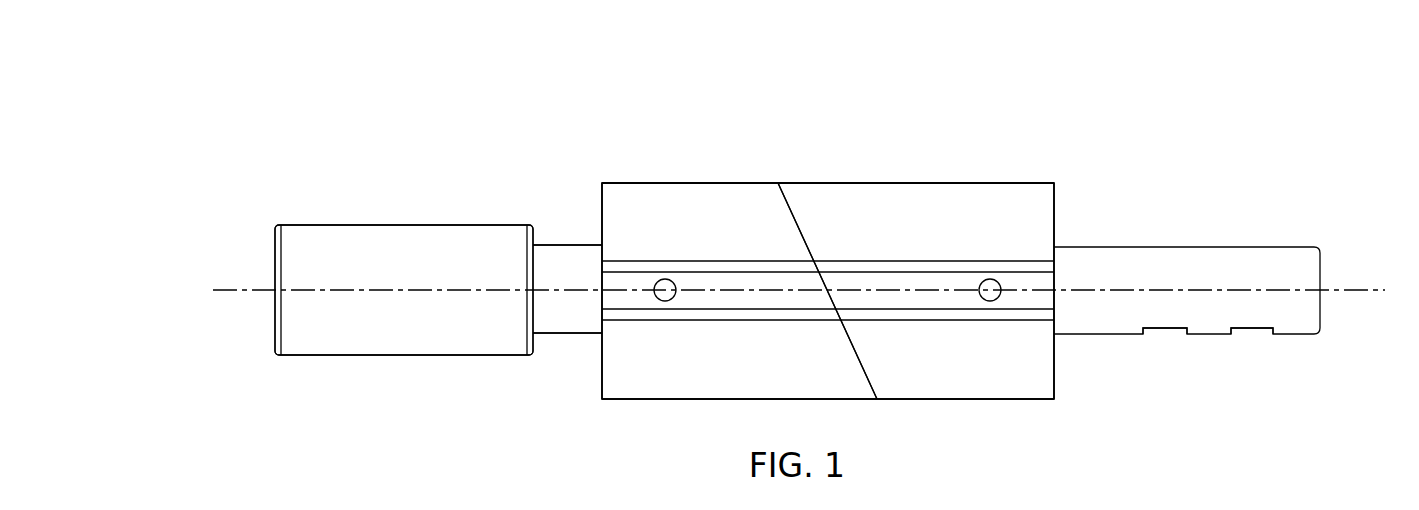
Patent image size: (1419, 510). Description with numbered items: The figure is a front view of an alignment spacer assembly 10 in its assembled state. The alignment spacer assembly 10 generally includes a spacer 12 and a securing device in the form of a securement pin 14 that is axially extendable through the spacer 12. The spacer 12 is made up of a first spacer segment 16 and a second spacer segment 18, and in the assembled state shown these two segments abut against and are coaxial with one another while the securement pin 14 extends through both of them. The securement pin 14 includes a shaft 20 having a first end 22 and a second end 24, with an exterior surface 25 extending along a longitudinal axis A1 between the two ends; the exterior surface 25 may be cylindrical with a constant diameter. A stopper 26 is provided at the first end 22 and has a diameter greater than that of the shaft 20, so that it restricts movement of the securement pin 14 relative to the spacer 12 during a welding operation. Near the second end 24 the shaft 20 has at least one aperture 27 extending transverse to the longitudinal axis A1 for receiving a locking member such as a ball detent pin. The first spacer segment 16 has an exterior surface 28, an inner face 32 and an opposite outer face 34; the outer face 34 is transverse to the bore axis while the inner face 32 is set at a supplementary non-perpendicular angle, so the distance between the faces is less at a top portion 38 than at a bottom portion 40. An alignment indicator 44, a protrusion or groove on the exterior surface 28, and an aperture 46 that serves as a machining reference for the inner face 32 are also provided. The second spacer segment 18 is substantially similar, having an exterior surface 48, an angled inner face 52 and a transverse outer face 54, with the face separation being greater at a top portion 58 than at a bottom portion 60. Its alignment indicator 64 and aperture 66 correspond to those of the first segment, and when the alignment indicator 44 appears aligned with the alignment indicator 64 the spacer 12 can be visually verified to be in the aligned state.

The alignment spacer assembly 10 is at (305, 142).
The spacer 12 is at (788, 160).
The securement pin 14 is at (467, 218).
The first spacer segment 16 is at (640, 178).
The second spacer segment 18 is at (937, 177).
The shaft 20 is at (547, 352).
The first end 22 is at (537, 248).
The second end 24 is at (1320, 260).
The exterior surface 25 is at (557, 335).
The stopper 26 is at (406, 225).
The aperture 27 is at (1170, 335).
The exterior surface 28 is at (710, 190).
The inner face 32 is at (843, 330).
The outer face 34 is at (602, 387).
The top portion 38 is at (680, 183).
The bottom portion 40 is at (680, 399).
The alignment indicator 44 is at (668, 262).
The aperture 46 is at (668, 300).
The exterior surface 48 is at (828, 192).
The inner face 52 is at (806, 240).
The outer face 54 is at (1057, 202).
The top portion 58 is at (1002, 183).
The bottom portion 60 is at (1013, 400).
The alignment indicator 64 is at (896, 261).
The aperture 66 is at (987, 290).
The longitudinal axis A1 is at (1370, 290).